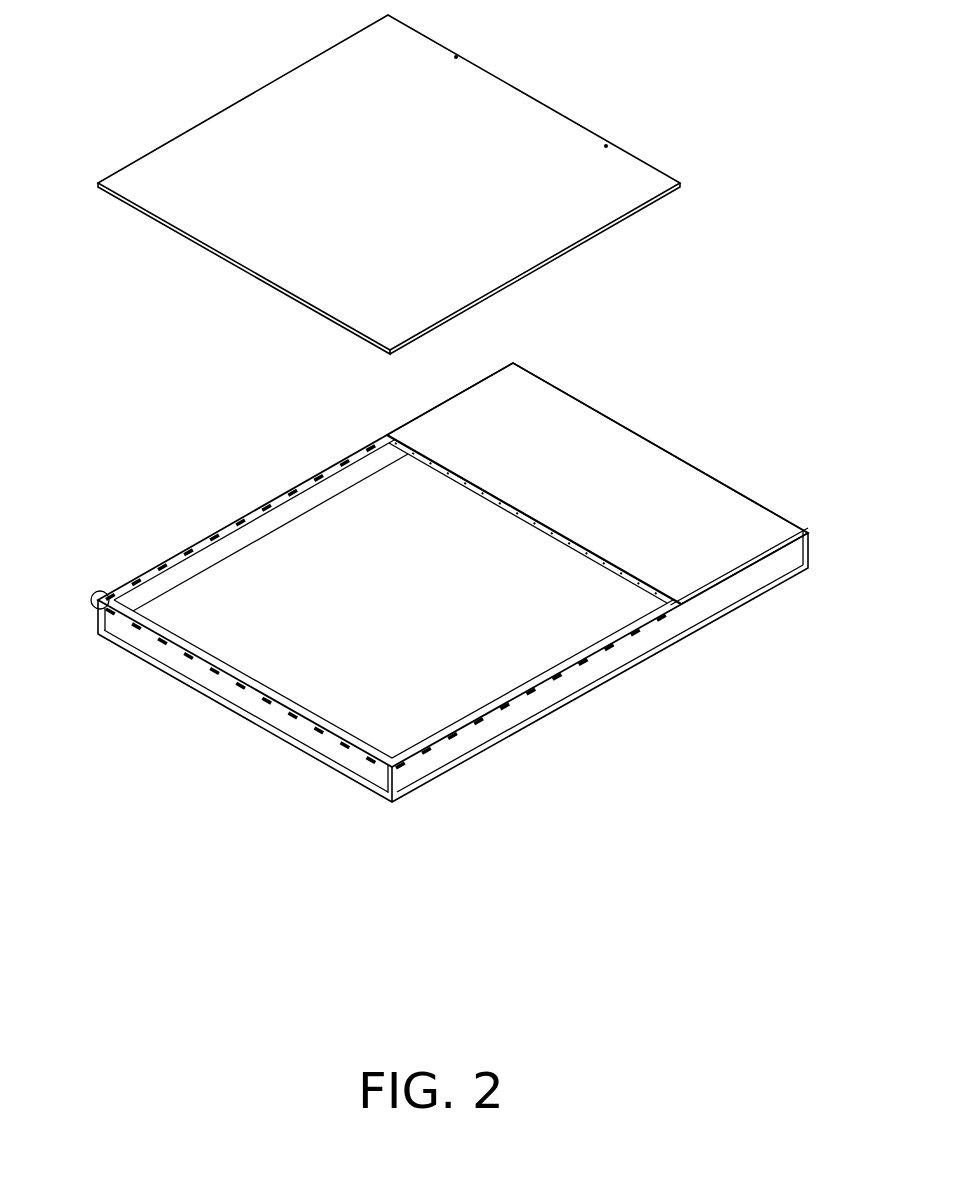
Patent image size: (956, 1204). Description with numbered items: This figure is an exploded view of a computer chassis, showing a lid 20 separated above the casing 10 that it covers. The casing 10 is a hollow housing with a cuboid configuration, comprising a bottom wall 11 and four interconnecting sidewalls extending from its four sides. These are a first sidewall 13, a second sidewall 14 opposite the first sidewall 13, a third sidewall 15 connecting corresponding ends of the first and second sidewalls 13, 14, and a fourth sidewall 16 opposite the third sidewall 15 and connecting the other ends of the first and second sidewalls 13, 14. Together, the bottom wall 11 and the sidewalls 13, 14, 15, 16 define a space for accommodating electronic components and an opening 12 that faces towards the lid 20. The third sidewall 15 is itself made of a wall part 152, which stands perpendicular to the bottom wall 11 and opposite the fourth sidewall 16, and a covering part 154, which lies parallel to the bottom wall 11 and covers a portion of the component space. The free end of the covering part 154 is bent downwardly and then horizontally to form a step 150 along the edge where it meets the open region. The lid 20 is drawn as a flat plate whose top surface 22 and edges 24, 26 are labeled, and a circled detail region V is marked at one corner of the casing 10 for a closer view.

The casing 10 is at (433, 560).
The bottom wall 11 is at (397, 553).
The opening 12 is at (583, 617).
The first sidewall 13 is at (222, 558).
The second sidewall 14 is at (545, 703).
The third sidewall 15 is at (609, 461).
The fourth sidewall 16 is at (262, 710).
The lid 20 is at (408, 184).
The top surface 22 is at (518, 137).
The side edge 24 is at (637, 214).
The side edge 26 is at (296, 299).
The step 150 is at (585, 548).
The wall part 152 is at (662, 447).
The covering part 154 is at (565, 425).
The detail view indicator V is at (96, 590).